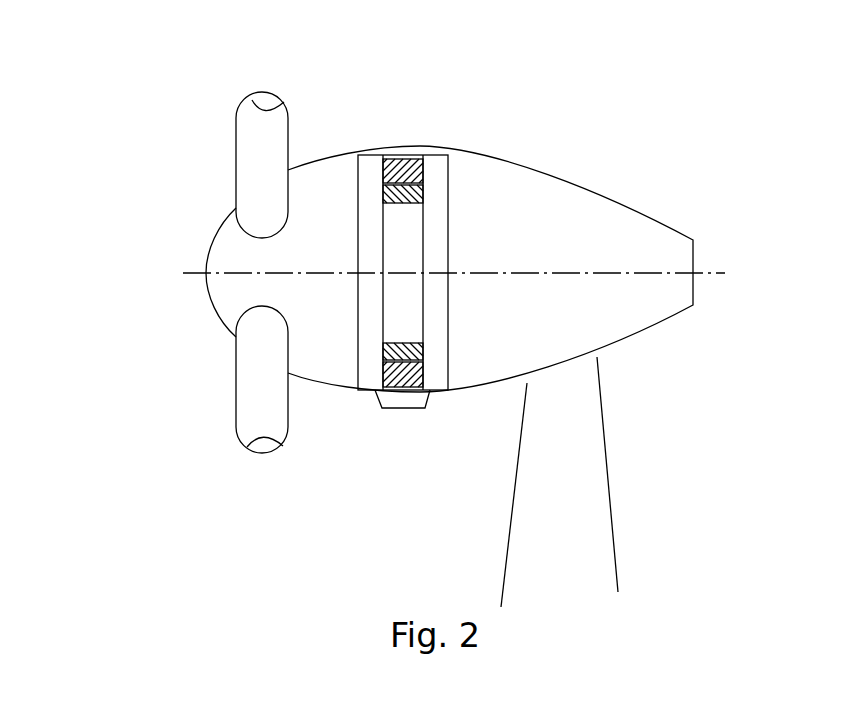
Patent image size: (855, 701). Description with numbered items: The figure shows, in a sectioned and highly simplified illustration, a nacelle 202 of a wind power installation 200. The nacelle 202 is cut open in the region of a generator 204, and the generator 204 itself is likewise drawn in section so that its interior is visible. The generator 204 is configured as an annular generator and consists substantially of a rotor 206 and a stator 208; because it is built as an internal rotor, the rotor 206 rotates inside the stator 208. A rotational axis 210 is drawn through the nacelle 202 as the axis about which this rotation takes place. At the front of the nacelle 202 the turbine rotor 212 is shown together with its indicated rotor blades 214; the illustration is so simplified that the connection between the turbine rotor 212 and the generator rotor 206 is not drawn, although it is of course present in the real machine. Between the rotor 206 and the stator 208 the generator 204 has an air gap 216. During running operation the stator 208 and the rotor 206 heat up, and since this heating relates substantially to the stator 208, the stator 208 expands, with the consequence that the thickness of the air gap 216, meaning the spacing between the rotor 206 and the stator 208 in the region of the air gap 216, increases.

The wind power installation 200 is at (677, 146).
The nacelle 202 is at (518, 183).
The generator 204 is at (410, 240).
The rotor 206 is at (422, 347).
The stator 208 is at (423, 172).
The rotational axis 210 is at (195, 270).
The turbine rotor 212 is at (147, 320).
The rotor blades 214 is at (248, 143).
The air gap 216 is at (383, 183).